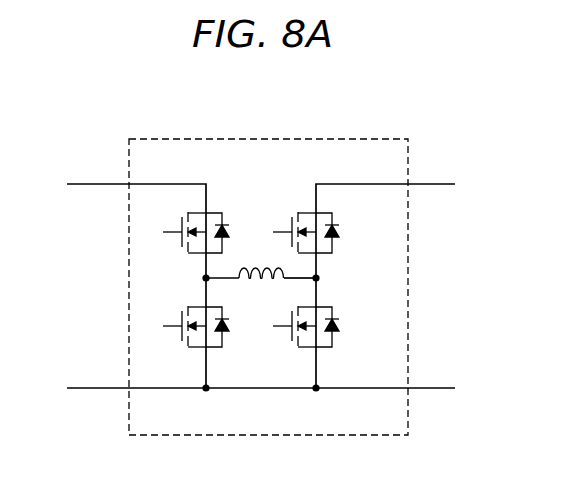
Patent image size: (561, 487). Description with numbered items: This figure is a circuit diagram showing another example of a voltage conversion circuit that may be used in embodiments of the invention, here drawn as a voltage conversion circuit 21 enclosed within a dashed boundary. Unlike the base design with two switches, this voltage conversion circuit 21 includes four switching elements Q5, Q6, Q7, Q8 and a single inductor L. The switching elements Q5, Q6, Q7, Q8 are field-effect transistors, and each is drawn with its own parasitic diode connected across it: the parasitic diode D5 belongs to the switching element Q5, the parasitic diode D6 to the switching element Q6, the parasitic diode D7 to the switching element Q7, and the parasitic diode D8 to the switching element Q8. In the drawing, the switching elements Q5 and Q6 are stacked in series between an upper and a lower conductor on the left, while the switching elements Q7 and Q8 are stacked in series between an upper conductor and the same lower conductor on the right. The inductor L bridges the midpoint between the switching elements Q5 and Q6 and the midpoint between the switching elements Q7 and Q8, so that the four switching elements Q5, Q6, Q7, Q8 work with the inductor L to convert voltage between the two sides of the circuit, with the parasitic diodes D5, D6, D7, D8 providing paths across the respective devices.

The voltage conversion circuit 21 is at (340, 138).
The switching element Q5 is at (179, 232).
The switching element Q6 is at (179, 325).
The switching element Q7 is at (289, 232).
The switching element Q8 is at (289, 325).
The parasitic diode D5 is at (228, 233).
The parasitic diode D6 is at (228, 327).
The parasitic diode D7 is at (338, 233).
The parasitic diode D8 is at (338, 327).
The inductor L is at (261, 263).